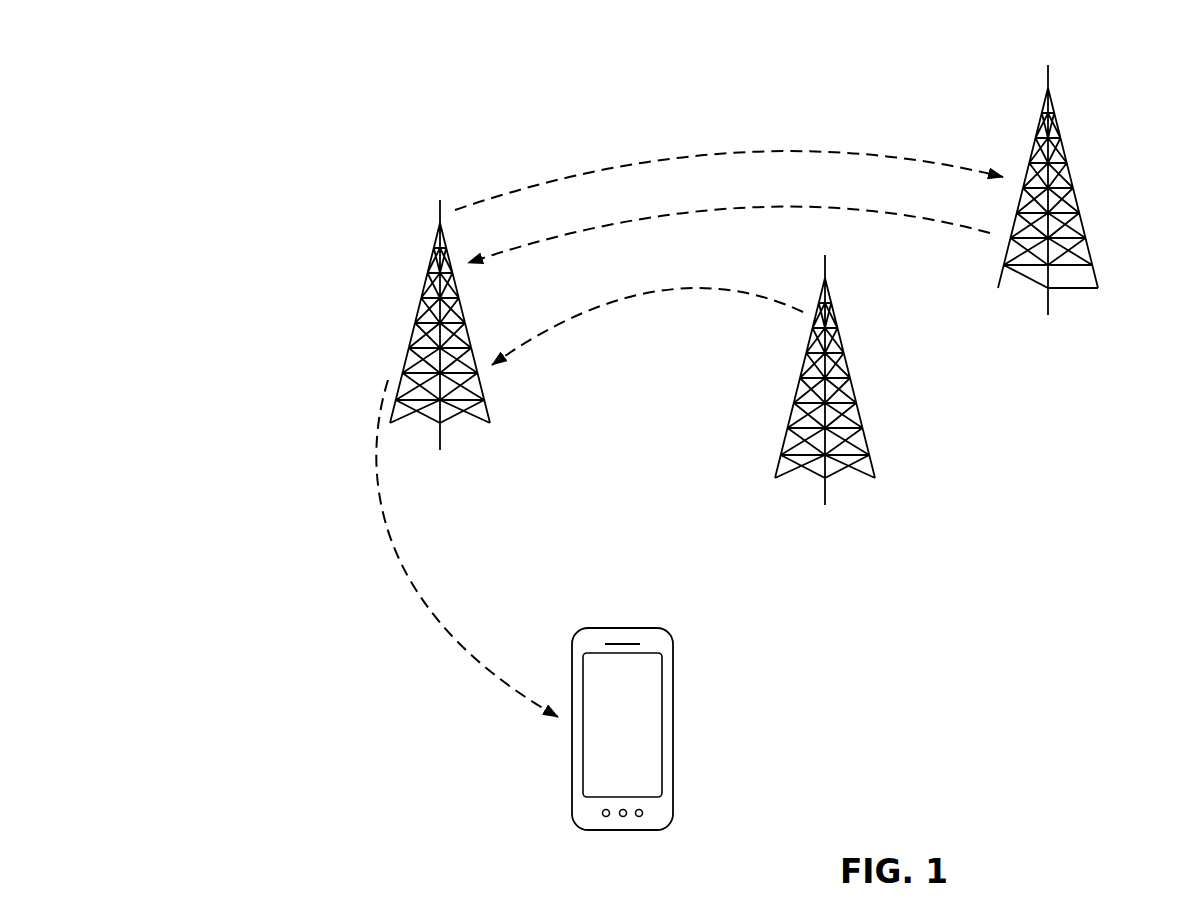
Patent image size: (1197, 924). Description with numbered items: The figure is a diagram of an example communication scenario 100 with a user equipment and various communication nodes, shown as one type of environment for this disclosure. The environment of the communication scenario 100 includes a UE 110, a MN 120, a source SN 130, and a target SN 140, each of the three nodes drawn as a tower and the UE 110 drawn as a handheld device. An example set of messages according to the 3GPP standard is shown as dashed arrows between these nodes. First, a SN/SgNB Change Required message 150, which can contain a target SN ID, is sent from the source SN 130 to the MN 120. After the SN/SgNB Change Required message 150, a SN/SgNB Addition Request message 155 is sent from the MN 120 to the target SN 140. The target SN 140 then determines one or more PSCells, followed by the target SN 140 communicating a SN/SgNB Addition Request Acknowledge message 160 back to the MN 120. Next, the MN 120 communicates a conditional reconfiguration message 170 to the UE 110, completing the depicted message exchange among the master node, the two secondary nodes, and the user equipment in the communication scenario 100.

The communication scenario 100 is at (118, 66).
The UE 110 is at (571, 778).
The MN 120 is at (439, 212).
The source SN 130 is at (777, 467).
The target SN 140 is at (1097, 280).
The SN/SgNB Change Required message 150 is at (697, 358).
The SN/SgNB Addition Request message 155 is at (513, 93).
The SN/SgNB Addition Request Acknowledge message 160 is at (968, 384).
The conditional reconfiguration message 170 is at (327, 670).